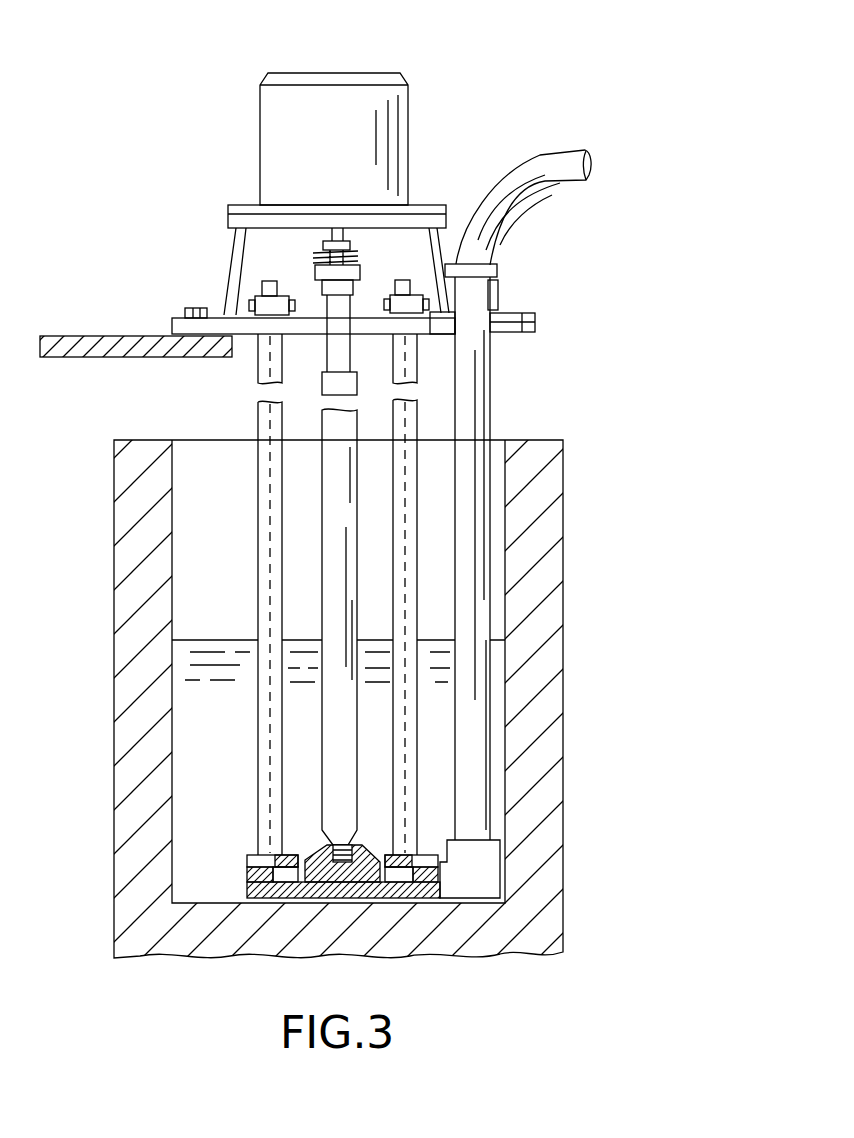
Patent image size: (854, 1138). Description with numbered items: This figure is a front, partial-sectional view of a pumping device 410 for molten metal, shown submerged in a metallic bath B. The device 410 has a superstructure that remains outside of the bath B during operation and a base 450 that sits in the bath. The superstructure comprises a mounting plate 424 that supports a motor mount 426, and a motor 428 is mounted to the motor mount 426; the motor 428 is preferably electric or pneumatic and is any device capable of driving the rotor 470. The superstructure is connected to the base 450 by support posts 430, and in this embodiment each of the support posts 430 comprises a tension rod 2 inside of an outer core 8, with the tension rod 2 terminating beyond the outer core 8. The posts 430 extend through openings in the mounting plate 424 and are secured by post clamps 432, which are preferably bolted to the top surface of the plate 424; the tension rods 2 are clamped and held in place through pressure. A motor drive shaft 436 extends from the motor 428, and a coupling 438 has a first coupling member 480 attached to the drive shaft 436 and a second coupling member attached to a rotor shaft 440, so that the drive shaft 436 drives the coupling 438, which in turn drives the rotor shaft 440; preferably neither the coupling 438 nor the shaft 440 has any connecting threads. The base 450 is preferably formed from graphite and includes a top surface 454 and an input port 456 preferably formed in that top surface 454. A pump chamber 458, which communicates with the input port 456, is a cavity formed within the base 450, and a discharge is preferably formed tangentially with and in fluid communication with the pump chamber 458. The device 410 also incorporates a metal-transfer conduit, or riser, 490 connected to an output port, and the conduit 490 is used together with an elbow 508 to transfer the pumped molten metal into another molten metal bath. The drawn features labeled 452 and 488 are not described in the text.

The pumping device 410 is at (125, 90).
The mounting plate 424 is at (172, 318).
The motor mount 426 is at (238, 203).
The motor 428 is at (408, 100).
The support posts 430 is at (258, 487).
The post clamps 432 is at (262, 292).
The motor drive shaft 436 is at (345, 236).
The coupling 438 is at (378, 262).
The rotor shaft 440 is at (357, 480).
The base 450 is at (247, 888).
The tube base fitting 452 is at (247, 866).
The top surface 454 is at (437, 855).
The input port 456 is at (307, 855).
The pump chamber 458 is at (290, 873).
The rotor 470 is at (372, 845).
The first coupling member 480 is at (322, 244).
The spring coupling housing 488 is at (316, 270).
The metal-transfer conduit 490 is at (490, 388).
The elbow 508 is at (576, 150).
The tension rod 2 is at (280, 292).
The outer core 8 is at (258, 363).
The metallic bath B is at (185, 677).